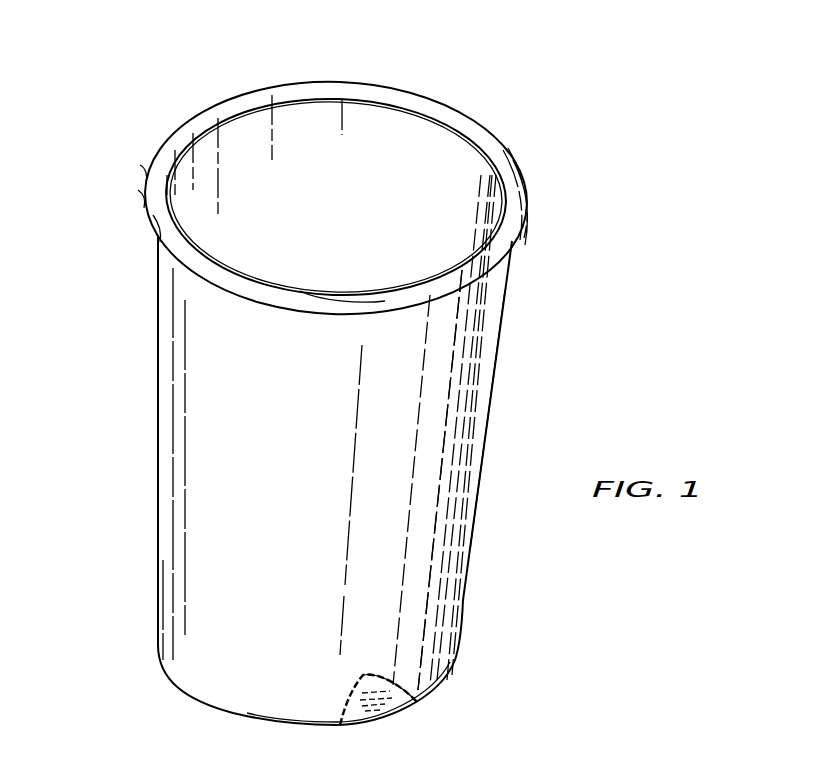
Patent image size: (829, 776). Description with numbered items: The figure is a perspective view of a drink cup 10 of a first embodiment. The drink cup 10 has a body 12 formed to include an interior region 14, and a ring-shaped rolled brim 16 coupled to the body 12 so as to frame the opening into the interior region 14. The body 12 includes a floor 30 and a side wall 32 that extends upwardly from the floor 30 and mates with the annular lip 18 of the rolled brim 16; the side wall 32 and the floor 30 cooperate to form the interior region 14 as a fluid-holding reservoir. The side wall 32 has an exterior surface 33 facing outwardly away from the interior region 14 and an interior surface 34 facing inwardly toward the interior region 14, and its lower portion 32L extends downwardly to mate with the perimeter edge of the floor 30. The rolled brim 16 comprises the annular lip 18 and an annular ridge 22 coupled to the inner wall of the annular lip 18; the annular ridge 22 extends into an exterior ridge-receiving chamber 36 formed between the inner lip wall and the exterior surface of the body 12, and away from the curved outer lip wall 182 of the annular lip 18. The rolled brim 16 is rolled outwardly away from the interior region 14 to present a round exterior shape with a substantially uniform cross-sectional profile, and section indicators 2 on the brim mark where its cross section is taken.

The drink cup 10 is at (110, 90).
The body 12 is at (155, 443).
The interior region 14 is at (373, 133).
The rolled brim 16 is at (157, 150).
The annular lip 18 is at (152, 220).
The annular ridge 22 is at (146, 182).
The interior surface 34 is at (227, 144).
The exterior ridge-receiving chamber 36 is at (304, 284).
The curved outer lip wall 182 is at (268, 288).
The section line 2 is at (420, 143).
The lower portion 32L is at (496, 355).
The exterior surface 33 is at (488, 428).
The side wall 32 is at (444, 540).
The floor 30 is at (390, 697).